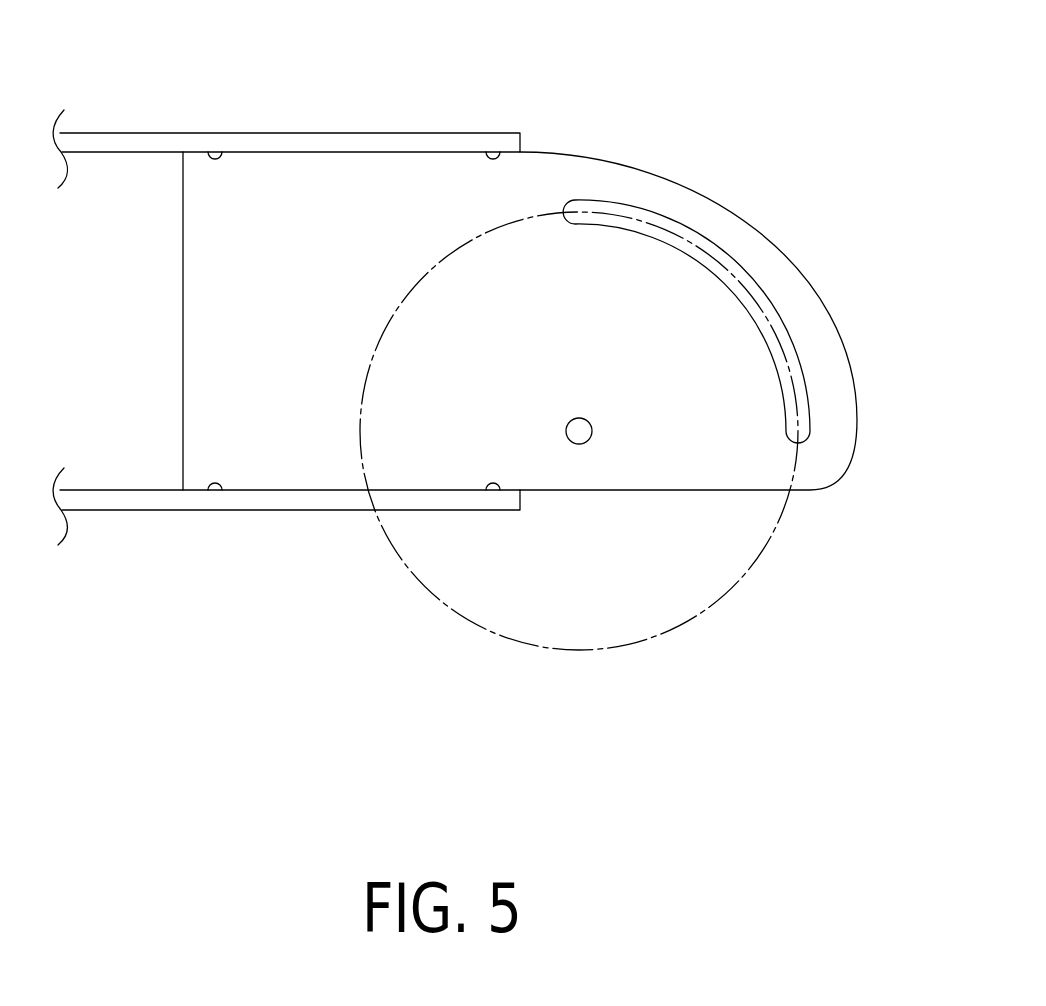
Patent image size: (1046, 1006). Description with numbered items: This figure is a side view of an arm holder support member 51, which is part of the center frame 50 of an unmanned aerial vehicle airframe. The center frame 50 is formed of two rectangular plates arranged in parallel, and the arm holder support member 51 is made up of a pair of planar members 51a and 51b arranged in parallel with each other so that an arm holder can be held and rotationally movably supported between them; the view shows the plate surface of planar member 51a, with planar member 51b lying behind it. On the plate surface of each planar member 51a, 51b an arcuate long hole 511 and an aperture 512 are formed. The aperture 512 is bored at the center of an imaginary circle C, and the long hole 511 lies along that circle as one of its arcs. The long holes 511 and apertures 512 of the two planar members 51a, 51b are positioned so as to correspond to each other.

The center frame 50 is at (118, 143).
The arm holder support member 51 is at (688, 248).
The planar member 51a is at (620, 173).
The planar member 51b is at (540, 152).
The arcuate long hole 511 is at (723, 250).
The aperture 512 is at (577, 444).
The imaginary circle C is at (413, 575).